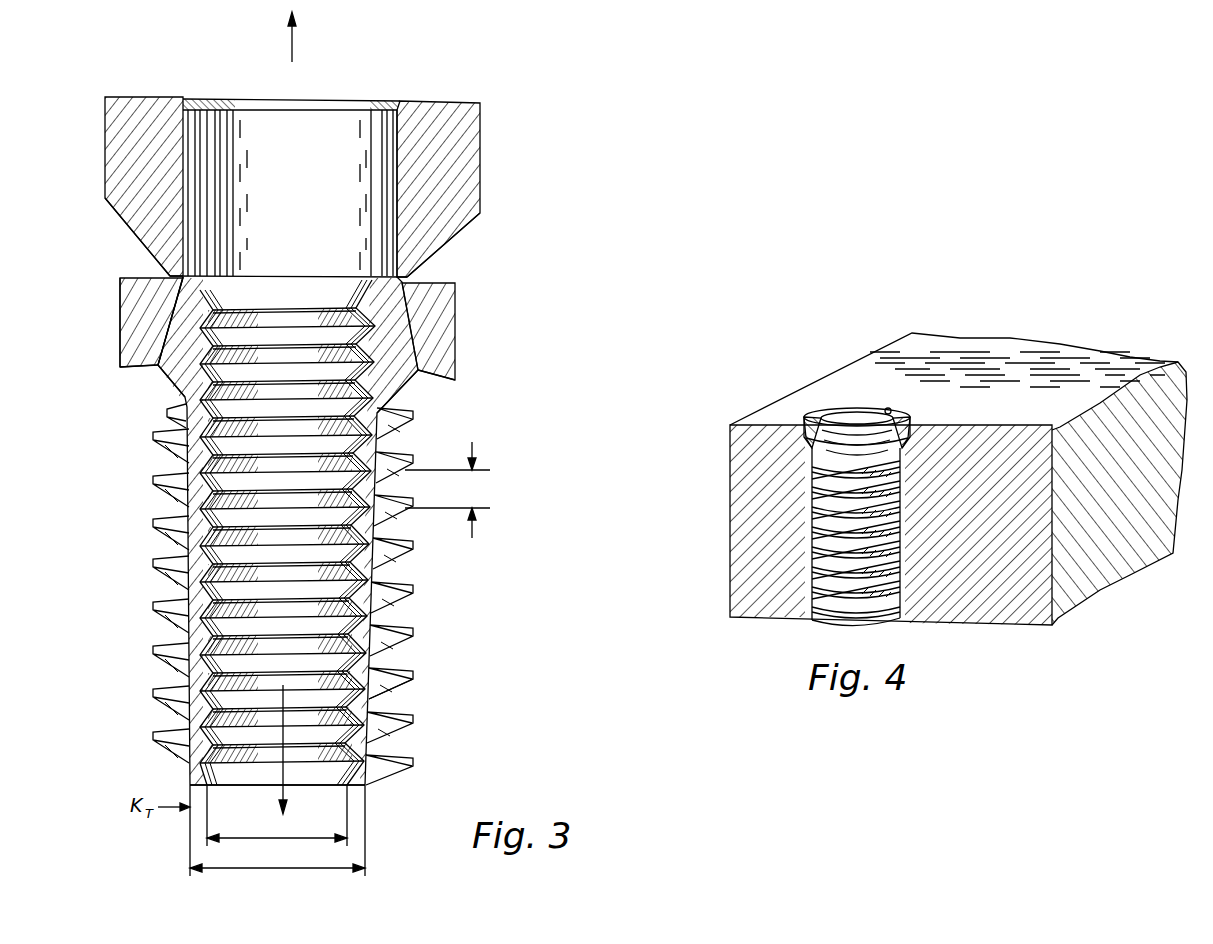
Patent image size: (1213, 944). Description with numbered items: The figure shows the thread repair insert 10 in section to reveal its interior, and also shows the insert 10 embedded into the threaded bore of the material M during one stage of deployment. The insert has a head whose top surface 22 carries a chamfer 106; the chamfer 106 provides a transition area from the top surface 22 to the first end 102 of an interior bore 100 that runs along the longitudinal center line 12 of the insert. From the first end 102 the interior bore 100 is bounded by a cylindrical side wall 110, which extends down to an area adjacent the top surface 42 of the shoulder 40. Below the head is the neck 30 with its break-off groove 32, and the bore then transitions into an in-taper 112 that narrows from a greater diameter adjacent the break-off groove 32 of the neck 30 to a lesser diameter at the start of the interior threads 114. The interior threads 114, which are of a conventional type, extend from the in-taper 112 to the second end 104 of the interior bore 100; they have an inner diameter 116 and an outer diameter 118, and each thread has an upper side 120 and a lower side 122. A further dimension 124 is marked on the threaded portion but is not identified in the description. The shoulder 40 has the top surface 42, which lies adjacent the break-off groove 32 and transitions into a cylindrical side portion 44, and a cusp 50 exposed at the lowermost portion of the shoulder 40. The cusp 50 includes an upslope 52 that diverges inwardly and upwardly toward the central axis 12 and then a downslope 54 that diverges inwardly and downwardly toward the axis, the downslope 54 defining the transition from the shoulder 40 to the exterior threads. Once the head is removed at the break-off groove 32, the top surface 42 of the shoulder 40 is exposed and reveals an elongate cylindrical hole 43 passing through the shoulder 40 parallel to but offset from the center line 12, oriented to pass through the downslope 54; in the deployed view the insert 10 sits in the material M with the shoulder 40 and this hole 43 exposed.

In FIG. 3, the top surface 22 is at (118, 96).
In FIG. 3, the longitudinal center line 12 is at (292, 50).
In FIG. 3, the interior bore 100 is at (343, 72).
In FIG. 3, the first end 102 is at (268, 108).
In FIG. 3, the chamfer 106 is at (378, 102).
In FIG. 3, the cylindrical side wall 110 is at (392, 172).
In FIG. 3, the in-taper 112 is at (356, 275).
In FIG. 3, the neck 30 is at (442, 238).
In FIG. 3, the break-off groove 32 is at (155, 272).
In FIG. 3, the top surface 42 is at (130, 265).
In FIG. 4, the top surface 42 is at (800, 412).
In FIG. 3, the cylindrical side portion 44 is at (120, 300).
In FIG. 3, the shoulder 40 is at (155, 330).
In FIG. 4, the shoulder 40 is at (906, 425).
In FIG. 3, the upslope 52 is at (160, 390).
In FIG. 3, the downslope 54 is at (160, 393).
In FIG. 3, the cusp 50 is at (138, 445).
In FIG. 3, the interior threads 114 is at (333, 313).
In FIG. 3, the thread pitch 124 is at (447, 490).
In FIG. 3, the upper side 120 is at (415, 628).
In FIG. 3, the lower side 122 is at (385, 708).
In FIG. 3, the second end 104 is at (323, 793).
In FIG. 3, the inner diameter 116 is at (287, 836).
In FIG. 3, the outer diameter 118 is at (268, 872).
In FIG. 4, the thread repair insert 10 is at (810, 374).
In FIG. 4, the cylindrical hole 43 is at (890, 409).
In FIG. 4, the material M is at (997, 598).